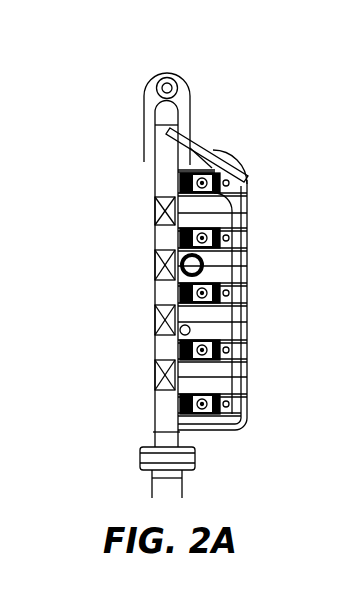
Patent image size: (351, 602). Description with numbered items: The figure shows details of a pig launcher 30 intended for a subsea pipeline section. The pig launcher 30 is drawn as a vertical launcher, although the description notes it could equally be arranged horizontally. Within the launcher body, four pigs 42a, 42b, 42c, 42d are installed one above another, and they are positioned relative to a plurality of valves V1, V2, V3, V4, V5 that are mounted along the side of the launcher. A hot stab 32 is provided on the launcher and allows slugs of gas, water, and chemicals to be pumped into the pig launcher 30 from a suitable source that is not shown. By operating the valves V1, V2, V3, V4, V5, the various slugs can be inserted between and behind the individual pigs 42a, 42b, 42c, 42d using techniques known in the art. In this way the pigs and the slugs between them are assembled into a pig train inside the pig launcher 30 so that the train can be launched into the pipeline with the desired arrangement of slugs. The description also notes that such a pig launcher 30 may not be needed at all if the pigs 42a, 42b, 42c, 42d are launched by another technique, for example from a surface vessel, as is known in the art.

The pig launcher 30 is at (264, 102).
The valve V1 is at (238, 158).
The valve V2 is at (245, 213).
The valve V3 is at (242, 278).
The valve V4 is at (245, 342).
The valve V5 is at (245, 390).
The hot stab 32 is at (206, 262).
The pig 42a is at (158, 380).
The pig 42b is at (158, 322).
The pig 42c is at (158, 265).
The pig 42d is at (160, 208).